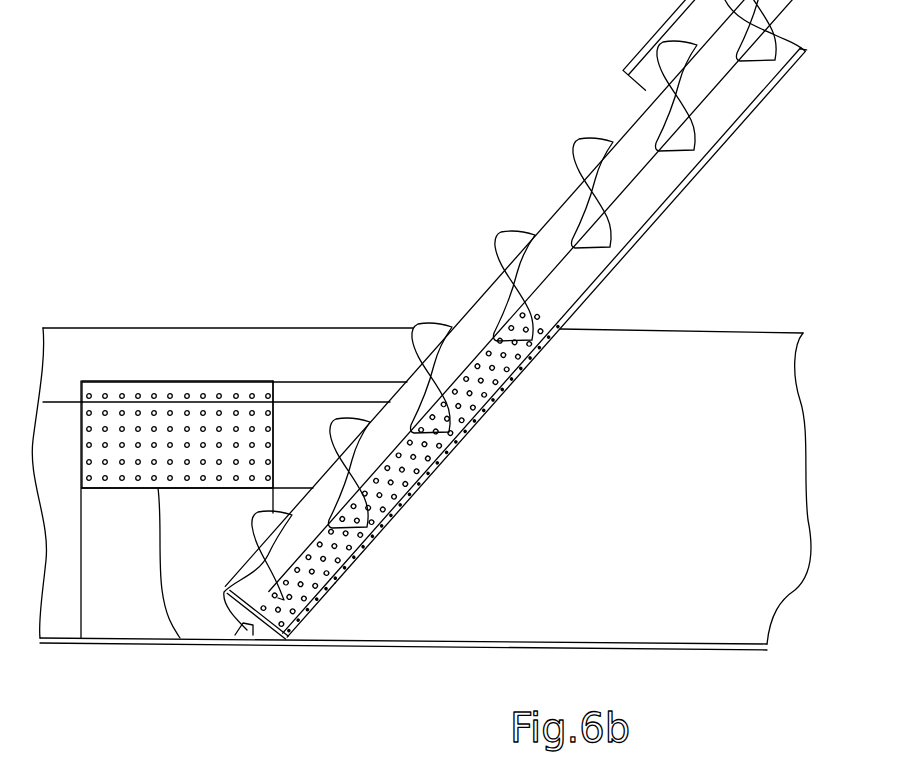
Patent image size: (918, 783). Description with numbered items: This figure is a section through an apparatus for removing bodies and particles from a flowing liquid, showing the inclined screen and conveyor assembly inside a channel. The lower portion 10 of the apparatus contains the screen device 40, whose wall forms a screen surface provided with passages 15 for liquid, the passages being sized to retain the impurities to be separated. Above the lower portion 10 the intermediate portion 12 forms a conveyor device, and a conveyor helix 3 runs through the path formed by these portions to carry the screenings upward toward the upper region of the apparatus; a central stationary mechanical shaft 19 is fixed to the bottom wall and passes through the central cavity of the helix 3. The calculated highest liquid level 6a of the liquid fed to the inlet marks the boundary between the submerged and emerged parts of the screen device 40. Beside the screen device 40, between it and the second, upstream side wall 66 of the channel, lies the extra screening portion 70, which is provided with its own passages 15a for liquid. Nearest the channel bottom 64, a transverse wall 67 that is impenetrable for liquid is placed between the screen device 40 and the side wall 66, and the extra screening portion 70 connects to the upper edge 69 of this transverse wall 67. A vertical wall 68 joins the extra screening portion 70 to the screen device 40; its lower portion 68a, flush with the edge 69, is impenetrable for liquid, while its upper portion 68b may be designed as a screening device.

The conveyor helix 3 is at (397, 510).
The calculated highest liquid level 6a is at (55, 402).
The lower portion 10 is at (355, 536).
The intermediate portion 12 is at (649, 40).
The passages 15 is at (430, 460).
The passages 15a is at (167, 393).
The central stationary mechanical shaft 19 is at (498, 397).
The screen device 40 is at (335, 573).
The bottom 64 is at (97, 647).
The second side wall 66 is at (88, 352).
The transverse wall 67 is at (162, 643).
The vertical wall 68 is at (322, 412).
The lower portion 68a is at (250, 645).
The upper portion 68b is at (287, 420).
The upper edge 69 is at (192, 645).
The extra screening portion 70 is at (240, 387).